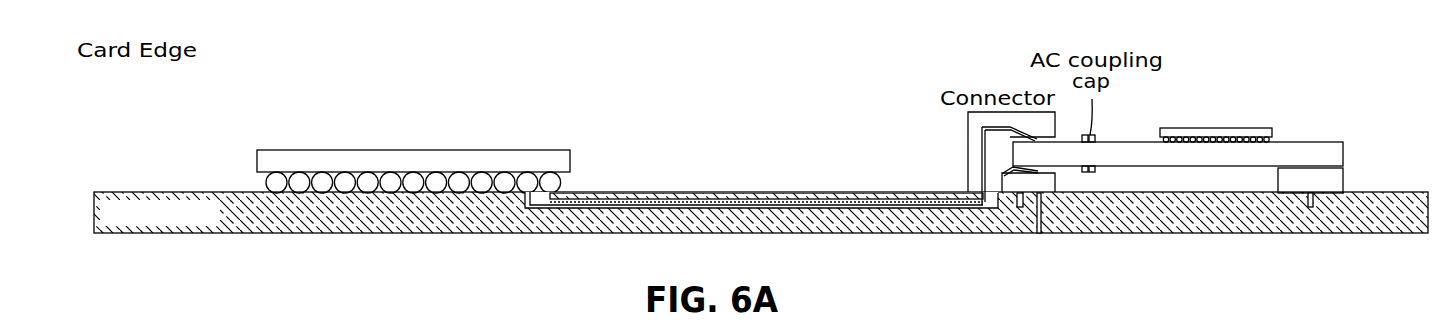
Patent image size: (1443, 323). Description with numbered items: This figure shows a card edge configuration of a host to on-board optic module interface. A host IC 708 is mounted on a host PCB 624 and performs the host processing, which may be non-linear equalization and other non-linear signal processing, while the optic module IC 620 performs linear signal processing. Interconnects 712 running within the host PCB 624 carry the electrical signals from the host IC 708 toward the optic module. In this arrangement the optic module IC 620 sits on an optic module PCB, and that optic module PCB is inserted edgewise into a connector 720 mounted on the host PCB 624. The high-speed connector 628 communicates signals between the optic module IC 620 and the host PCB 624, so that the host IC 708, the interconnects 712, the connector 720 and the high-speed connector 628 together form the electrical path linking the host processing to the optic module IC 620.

The host IC 708 is at (275, 150).
The interconnects 712 is at (635, 200).
The connector 720 is at (968, 129).
The high-speed connector 628 is at (980, 159).
The host PCB 624 is at (198, 227).
The optic module IC 620 is at (1260, 128).